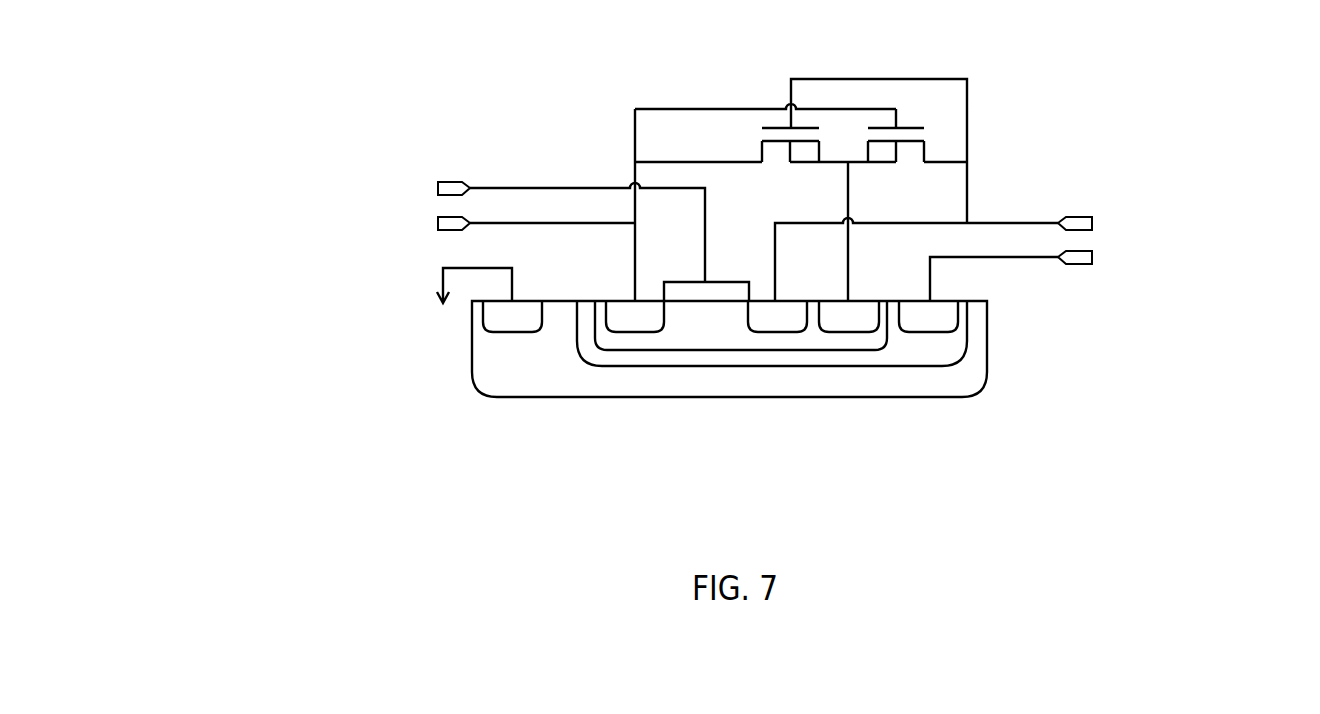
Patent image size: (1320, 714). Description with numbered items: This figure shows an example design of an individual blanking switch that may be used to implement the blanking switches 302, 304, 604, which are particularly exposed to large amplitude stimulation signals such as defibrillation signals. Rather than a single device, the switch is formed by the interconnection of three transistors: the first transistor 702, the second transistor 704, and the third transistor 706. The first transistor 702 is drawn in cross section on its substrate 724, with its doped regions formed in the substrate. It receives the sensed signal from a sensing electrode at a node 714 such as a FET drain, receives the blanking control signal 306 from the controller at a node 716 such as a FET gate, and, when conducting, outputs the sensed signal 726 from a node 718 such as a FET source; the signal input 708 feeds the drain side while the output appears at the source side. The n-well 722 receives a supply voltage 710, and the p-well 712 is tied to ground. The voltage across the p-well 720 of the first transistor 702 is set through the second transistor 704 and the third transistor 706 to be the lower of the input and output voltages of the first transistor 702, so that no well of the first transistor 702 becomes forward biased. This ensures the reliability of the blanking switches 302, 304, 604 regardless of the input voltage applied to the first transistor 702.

The blanking switch 302 is at (933, 171).
The blanking switch 304 is at (933, 171).
The blanking switch 604 is at (933, 171).
The blanking control signal 306 is at (325, 173).
The M1 transistor 702 is at (457, 361).
The M2 transistor 704 is at (772, 113).
The M3 transistor 706 is at (922, 118).
The signal input 708 is at (347, 236).
The supply voltage 710 is at (1128, 272).
The p-well 712 is at (527, 300).
The node 714 is at (647, 300).
The node 716 is at (720, 281).
The node 718 is at (795, 300).
The p-well 720 is at (870, 300).
The n-well 722 is at (952, 301).
The substrate 724 is at (872, 387).
The sensed signal 726 is at (1125, 213).